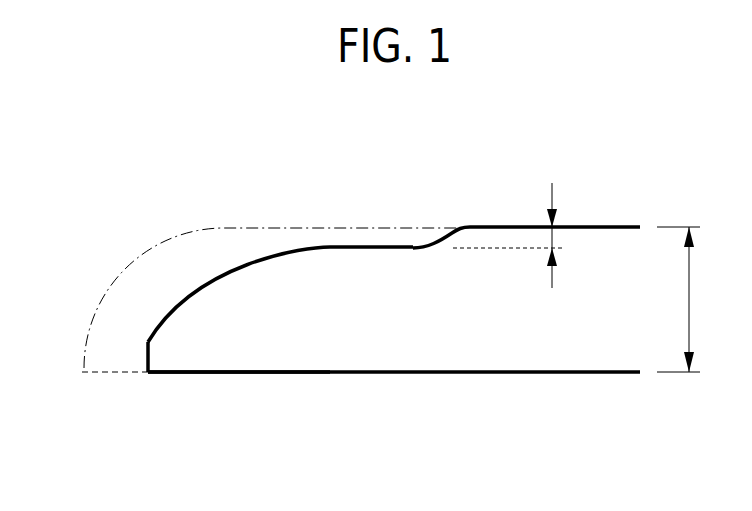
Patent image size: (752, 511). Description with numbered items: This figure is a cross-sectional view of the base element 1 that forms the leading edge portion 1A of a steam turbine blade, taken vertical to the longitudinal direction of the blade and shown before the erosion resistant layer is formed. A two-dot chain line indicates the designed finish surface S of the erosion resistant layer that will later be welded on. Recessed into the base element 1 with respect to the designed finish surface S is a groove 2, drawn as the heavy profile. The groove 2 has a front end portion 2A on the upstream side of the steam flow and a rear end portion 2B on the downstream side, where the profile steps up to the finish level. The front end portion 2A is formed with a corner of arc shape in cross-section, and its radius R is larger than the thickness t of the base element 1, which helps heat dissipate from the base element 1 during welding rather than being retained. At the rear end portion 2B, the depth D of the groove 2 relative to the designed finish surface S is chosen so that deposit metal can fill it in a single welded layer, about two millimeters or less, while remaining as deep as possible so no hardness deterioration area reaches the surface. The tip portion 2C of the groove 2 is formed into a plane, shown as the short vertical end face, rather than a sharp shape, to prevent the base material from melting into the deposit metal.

The base element 1 is at (502, 350).
The leading edge portion 1A is at (200, 296).
The groove 2 is at (336, 259).
The front end portion 2A is at (172, 308).
The rear end portion 2B is at (447, 237).
The tip portion 2C is at (147, 352).
The radius of the corner R is at (223, 276).
The designed finish surface S is at (130, 265).
The depth of the groove D is at (517, 235).
The thickness of the base element t is at (683, 299).